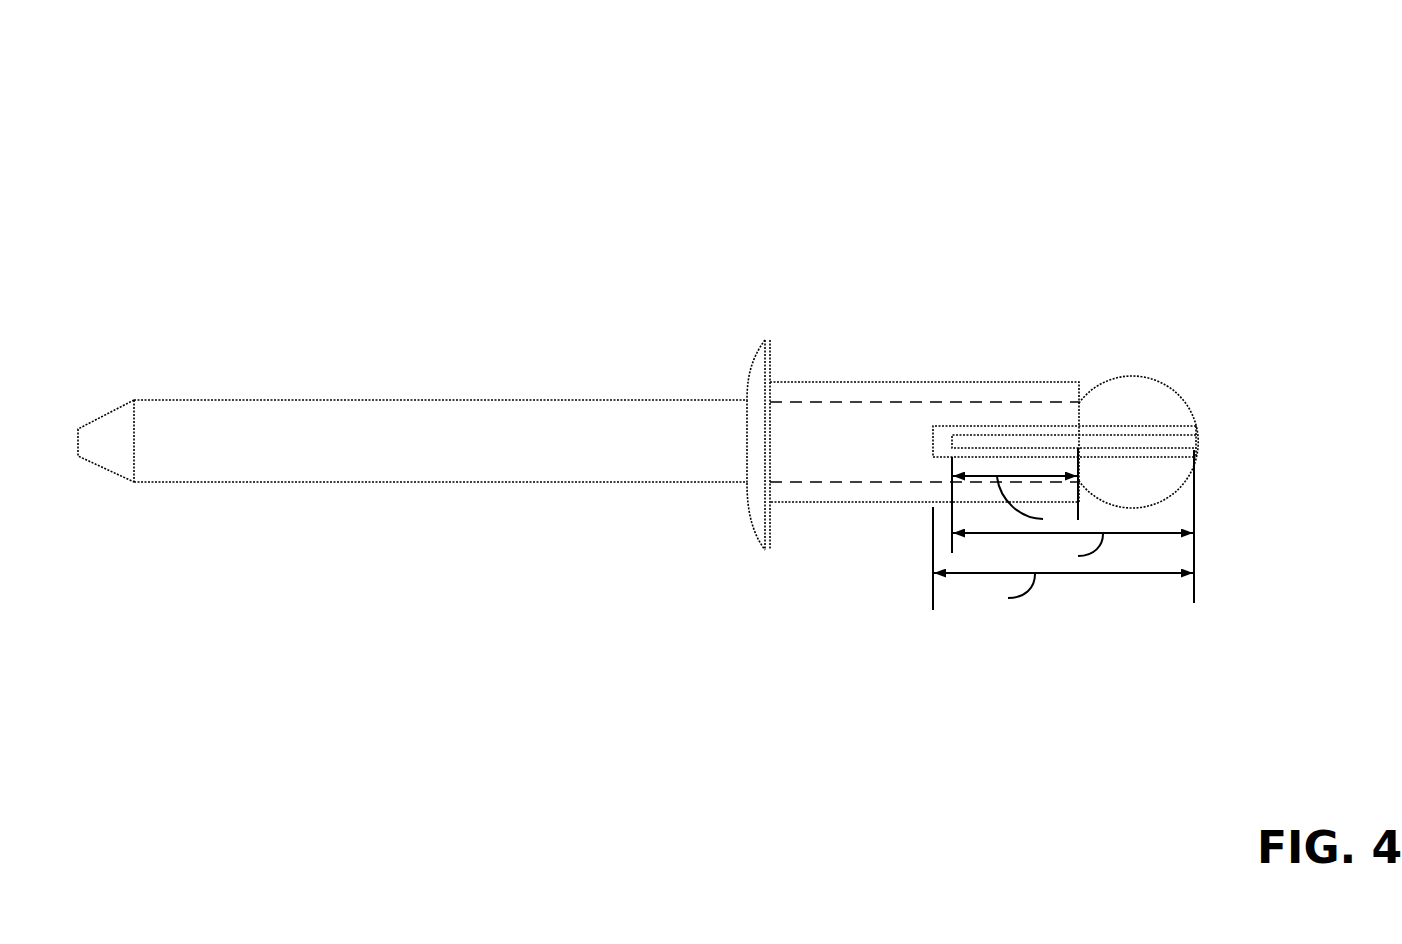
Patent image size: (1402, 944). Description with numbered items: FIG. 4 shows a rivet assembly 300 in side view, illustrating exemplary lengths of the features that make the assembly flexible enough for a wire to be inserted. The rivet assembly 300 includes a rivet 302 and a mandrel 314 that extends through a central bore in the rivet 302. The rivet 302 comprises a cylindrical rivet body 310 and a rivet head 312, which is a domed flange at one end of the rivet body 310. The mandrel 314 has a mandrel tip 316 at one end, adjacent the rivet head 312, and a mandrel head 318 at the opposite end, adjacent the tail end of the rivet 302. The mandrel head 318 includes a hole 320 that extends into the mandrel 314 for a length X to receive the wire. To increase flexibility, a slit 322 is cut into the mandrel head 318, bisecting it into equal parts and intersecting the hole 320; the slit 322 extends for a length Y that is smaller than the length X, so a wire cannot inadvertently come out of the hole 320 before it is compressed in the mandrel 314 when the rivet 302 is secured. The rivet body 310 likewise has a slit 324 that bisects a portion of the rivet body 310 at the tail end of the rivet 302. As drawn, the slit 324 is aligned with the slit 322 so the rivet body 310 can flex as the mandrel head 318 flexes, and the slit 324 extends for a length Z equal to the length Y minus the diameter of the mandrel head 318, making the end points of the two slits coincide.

The rivet assembly 300 is at (912, 92).
The rivet 302 is at (958, 279).
The rivet body 310 is at (889, 382).
The rivet head 312 is at (765, 338).
The mandrel 314 is at (592, 401).
The mandrel tip 316 is at (100, 418).
The mandrel head 318 is at (1133, 375).
The hole 320 is at (1204, 443).
The slit 322 is at (1153, 428).
The slit 324 is at (1024, 428).